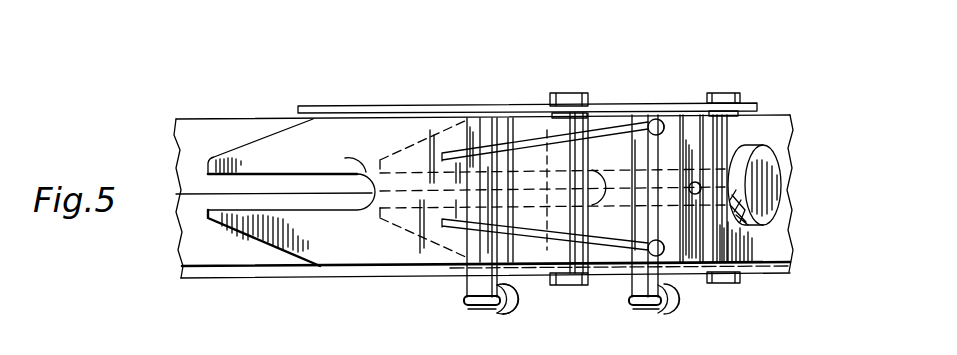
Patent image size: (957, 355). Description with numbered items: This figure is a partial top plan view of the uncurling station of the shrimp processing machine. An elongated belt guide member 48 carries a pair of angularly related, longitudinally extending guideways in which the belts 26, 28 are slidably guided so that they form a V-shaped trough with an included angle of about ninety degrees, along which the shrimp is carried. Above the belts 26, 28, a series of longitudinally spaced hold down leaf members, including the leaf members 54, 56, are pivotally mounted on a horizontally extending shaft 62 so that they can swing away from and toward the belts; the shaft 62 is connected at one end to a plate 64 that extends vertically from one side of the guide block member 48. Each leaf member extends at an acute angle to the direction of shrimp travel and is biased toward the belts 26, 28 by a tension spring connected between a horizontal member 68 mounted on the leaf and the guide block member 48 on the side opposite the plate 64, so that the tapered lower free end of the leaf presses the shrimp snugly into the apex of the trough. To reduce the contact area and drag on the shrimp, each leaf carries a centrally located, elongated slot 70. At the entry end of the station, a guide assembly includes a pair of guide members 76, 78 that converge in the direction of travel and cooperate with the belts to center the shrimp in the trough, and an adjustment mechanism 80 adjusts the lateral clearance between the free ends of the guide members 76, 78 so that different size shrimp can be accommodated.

The belt 26 is at (197, 252).
The belt 28 is at (200, 132).
The belt guide member 48 is at (773, 263).
The hold down leaf member 54 is at (532, 250).
The hold down leaf member 56 is at (312, 248).
The shaft 62 is at (563, 93).
The plate 64 is at (497, 100).
The horizontal member 68 is at (480, 278).
The elongated slot 70 is at (302, 178).
The guide member 76 is at (623, 245).
The guide member 78 is at (613, 127).
The adjustment mechanism 80 is at (747, 242).